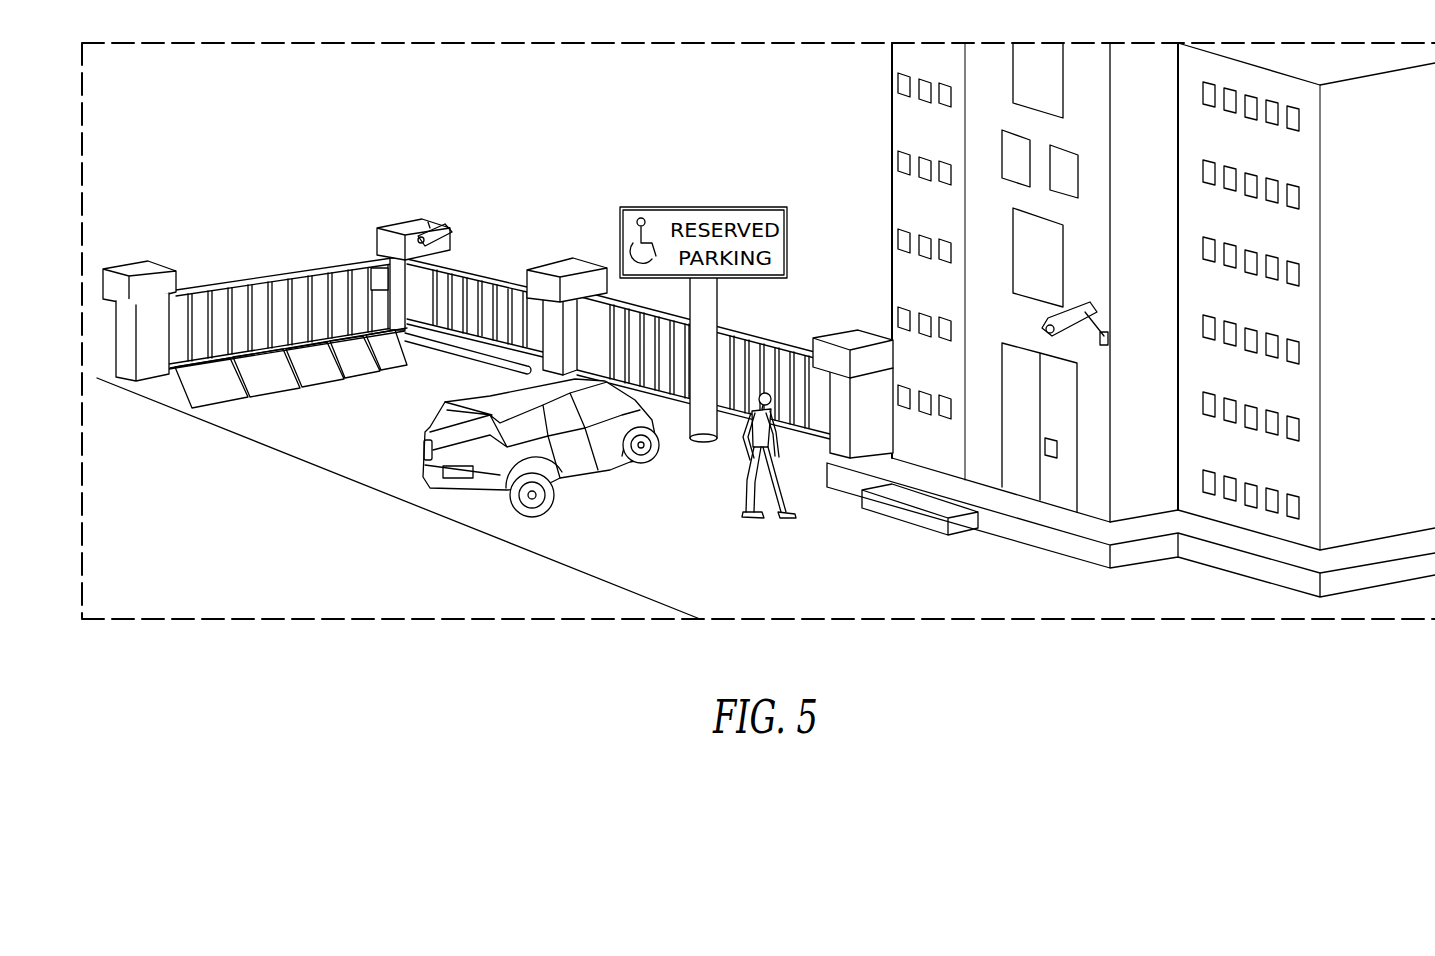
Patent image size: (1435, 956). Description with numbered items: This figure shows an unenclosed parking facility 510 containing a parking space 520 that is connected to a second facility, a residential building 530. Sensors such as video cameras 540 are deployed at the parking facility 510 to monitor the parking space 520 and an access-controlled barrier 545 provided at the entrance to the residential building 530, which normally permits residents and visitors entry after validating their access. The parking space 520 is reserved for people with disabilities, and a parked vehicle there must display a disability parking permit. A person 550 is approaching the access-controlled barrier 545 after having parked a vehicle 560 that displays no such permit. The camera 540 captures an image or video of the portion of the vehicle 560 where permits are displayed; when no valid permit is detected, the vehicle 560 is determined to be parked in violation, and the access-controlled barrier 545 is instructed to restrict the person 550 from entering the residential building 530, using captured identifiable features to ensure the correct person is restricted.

The unenclosed parking facility 510 is at (288, 258).
The parking space 520 is at (360, 439).
The residential building 530 is at (1372, 487).
The video camera 540 is at (432, 230).
The access-controlled barrier 545 is at (1088, 307).
The person 550 is at (745, 495).
The vehicle 560 is at (447, 492).